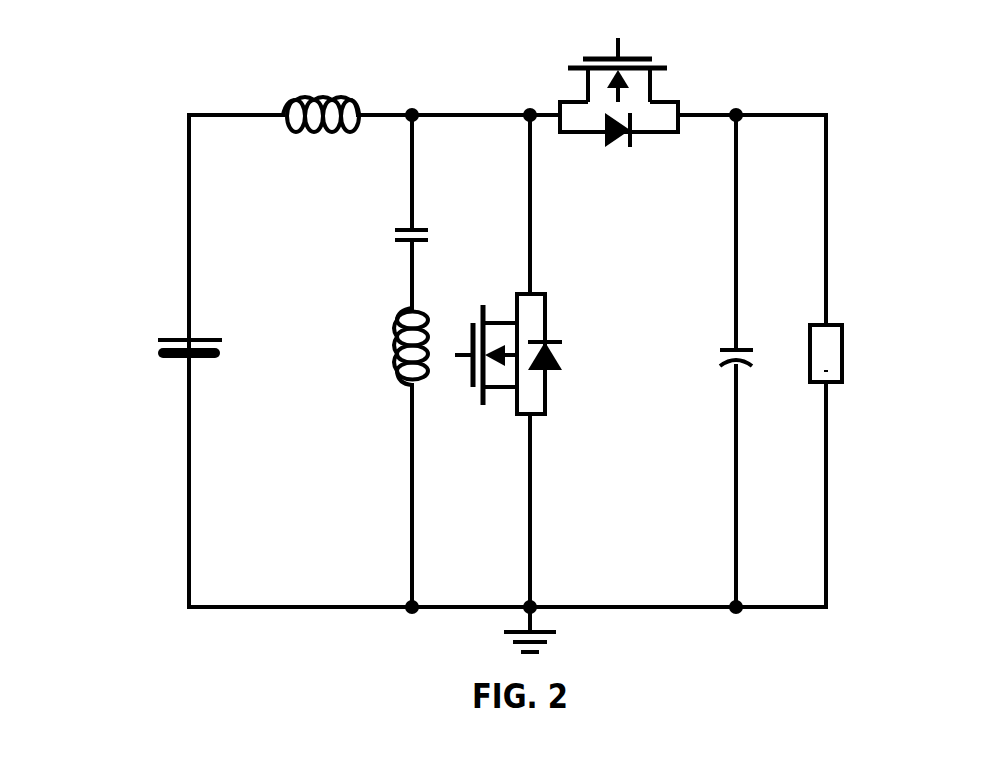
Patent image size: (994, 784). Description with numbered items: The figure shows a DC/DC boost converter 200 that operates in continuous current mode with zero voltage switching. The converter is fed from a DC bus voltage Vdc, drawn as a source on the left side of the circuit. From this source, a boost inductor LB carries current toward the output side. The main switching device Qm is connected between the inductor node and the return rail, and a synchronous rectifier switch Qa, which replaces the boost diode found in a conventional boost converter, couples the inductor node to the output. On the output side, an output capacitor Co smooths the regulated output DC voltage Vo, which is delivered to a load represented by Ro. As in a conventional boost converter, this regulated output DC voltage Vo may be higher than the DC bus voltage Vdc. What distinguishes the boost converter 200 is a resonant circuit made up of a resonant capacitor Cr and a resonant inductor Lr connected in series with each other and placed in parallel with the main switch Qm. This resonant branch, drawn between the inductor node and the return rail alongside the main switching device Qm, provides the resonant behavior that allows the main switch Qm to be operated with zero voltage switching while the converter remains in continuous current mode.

The boost converter 200 is at (159, 192).
The DC bus voltage Vdc is at (154, 344).
The boost inductor LB is at (293, 90).
The resonant capacitor Cr is at (385, 235).
The resonant inductor Lr is at (385, 358).
The main switching device Qm is at (545, 354).
The synchronous rectifier switch Qa is at (619, 122).
The output capacitor Co is at (716, 389).
The load Ro is at (807, 378).
The regulated output DC voltage Vo is at (863, 397).